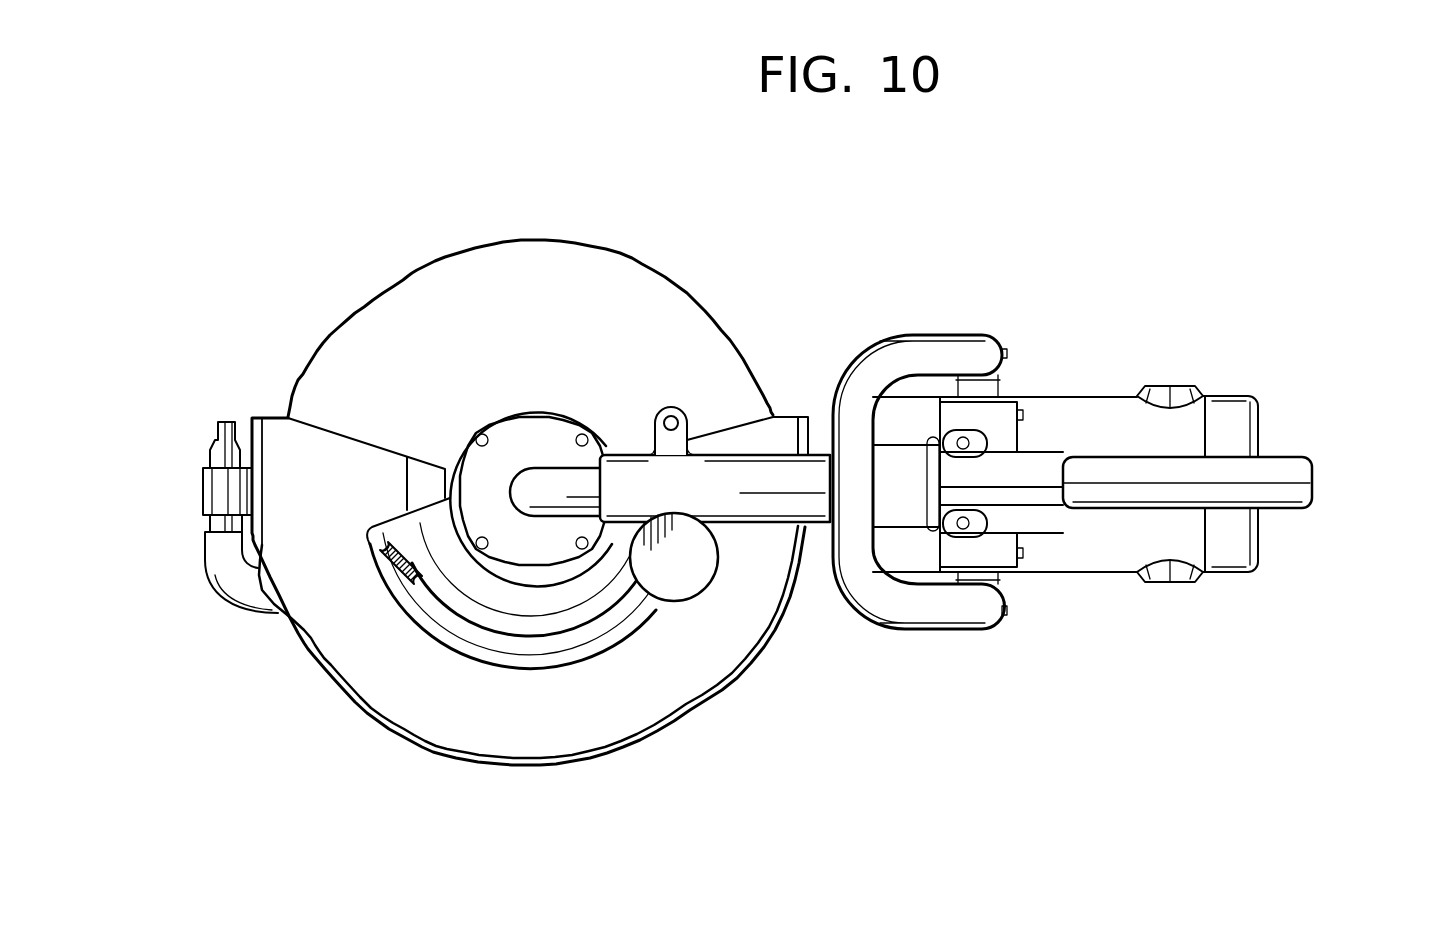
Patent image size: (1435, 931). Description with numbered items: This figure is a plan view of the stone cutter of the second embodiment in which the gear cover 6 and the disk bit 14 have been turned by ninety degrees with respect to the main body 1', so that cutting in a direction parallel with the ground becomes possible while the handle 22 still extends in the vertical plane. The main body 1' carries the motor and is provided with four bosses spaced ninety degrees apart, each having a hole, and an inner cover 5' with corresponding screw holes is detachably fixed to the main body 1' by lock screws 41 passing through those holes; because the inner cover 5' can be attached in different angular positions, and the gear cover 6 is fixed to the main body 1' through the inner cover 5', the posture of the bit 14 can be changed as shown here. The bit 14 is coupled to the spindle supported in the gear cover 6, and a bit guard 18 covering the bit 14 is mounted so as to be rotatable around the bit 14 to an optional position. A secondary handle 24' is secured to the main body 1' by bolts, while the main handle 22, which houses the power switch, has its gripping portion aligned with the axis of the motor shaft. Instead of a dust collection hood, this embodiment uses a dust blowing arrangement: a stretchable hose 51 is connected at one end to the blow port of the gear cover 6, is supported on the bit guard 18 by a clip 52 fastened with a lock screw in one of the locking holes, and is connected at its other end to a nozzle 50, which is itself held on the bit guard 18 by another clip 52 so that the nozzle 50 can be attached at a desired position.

The bit 14 is at (592, 262).
The bit guard 18 is at (540, 740).
The gear cover 6 is at (763, 507).
The inner cover 5' is at (1005, 413).
The secondary handle 24' is at (920, 542).
The lock screws 41 is at (1023, 410).
The main body 1' is at (1099, 428).
The handle 22 is at (1314, 484).
The nozzle 50 is at (215, 433).
The clip 52 is at (203, 490).
The hose 51 is at (212, 580).